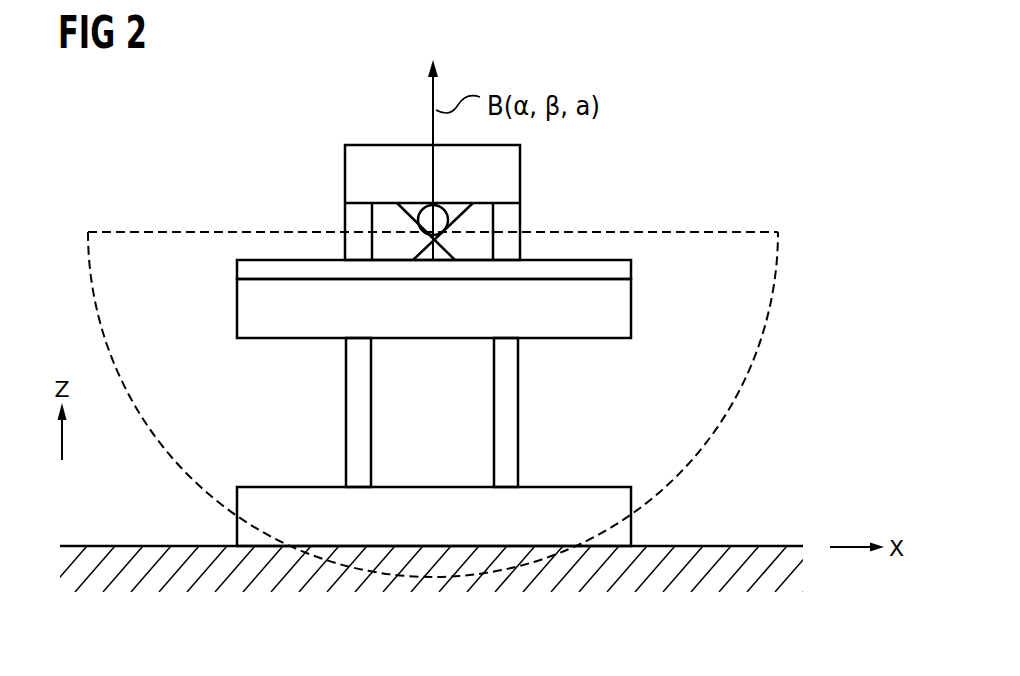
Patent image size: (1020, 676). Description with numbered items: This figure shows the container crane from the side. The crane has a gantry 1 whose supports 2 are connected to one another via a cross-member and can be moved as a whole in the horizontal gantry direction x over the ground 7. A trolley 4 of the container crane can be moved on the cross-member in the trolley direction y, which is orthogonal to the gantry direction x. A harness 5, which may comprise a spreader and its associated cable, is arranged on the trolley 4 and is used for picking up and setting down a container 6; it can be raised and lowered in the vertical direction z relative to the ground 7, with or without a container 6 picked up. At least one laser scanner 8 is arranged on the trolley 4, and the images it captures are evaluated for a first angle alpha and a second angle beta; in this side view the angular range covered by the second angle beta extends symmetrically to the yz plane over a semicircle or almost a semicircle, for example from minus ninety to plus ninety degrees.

The gantry 1 is at (259, 99).
The supports 2 is at (519, 420).
The trolley 4 is at (520, 177).
The harness 5 is at (607, 259).
The container 6 is at (632, 315).
The ground 7 is at (648, 578).
The laser scanner 8 is at (427, 208).